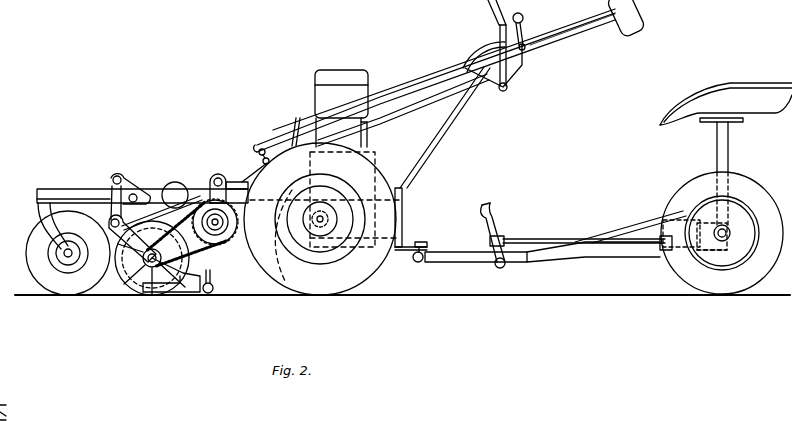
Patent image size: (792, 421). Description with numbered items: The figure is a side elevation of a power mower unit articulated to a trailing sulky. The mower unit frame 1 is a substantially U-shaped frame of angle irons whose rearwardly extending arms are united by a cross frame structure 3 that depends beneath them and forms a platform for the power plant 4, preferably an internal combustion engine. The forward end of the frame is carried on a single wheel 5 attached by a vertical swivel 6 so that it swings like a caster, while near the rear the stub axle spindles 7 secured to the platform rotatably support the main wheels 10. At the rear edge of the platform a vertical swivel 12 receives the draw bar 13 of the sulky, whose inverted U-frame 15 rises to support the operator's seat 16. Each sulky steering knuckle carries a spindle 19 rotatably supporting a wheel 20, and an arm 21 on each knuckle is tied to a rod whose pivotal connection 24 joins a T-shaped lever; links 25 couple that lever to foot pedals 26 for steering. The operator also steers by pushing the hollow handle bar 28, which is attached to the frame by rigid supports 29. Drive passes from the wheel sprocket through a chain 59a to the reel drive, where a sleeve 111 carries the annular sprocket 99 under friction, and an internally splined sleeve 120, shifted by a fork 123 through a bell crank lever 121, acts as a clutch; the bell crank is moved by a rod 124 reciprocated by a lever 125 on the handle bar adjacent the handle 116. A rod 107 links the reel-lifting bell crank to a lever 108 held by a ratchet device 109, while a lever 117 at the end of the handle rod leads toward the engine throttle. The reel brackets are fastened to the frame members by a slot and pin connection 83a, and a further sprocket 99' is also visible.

The mower unit frame 1 is at (97, 189).
The cross frame structure 3 is at (404, 228).
The power plant 4 is at (343, 78).
The single wheel 5 is at (30, 260).
The vertical swivel 6 is at (42, 190).
The stub axle spindles 7 is at (276, 284).
The wheels 10 is at (265, 270).
The vertical swivel 12 is at (424, 243).
The draw bar 13 is at (455, 257).
The inverted U-frame 15 is at (729, 147).
The operator's seat 16 is at (746, 80).
The spindle 19 is at (729, 238).
The wheel 20 is at (685, 188).
The arm 21 is at (690, 258).
The pivotal connection 24 is at (675, 213).
The links 25 is at (545, 239).
The foot pedals 26 is at (497, 216).
The handle bar 28 is at (578, 37).
The rigid supports 29 is at (293, 126).
The chain 59a is at (296, 0).
The slot and pin connection 83a is at (178, 173).
The sprocket 99 is at (190, 233).
The sprocket 99' is at (150, 7).
The rod 107 is at (400, 88).
The lever 108 is at (496, 30).
The ratchet device 109 is at (470, 52).
The sleeve 111 is at (212, 0).
The handle 116 is at (641, 18).
The lever 117 is at (258, 152).
The internally splined sleeve 120 is at (260, 4).
The bell crank lever 121 is at (218, 178).
The fork 123 is at (186, 190).
The rod 124 is at (393, 118).
The lever 125 is at (524, 28).